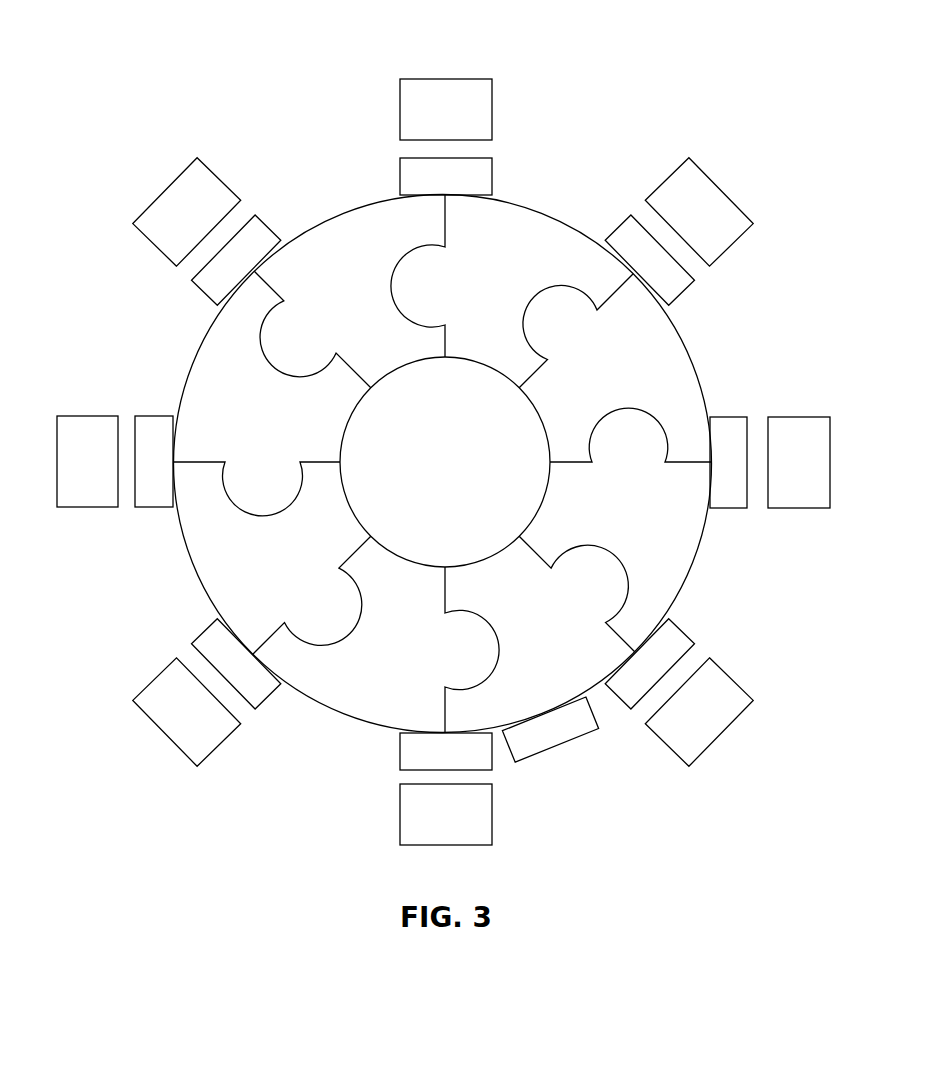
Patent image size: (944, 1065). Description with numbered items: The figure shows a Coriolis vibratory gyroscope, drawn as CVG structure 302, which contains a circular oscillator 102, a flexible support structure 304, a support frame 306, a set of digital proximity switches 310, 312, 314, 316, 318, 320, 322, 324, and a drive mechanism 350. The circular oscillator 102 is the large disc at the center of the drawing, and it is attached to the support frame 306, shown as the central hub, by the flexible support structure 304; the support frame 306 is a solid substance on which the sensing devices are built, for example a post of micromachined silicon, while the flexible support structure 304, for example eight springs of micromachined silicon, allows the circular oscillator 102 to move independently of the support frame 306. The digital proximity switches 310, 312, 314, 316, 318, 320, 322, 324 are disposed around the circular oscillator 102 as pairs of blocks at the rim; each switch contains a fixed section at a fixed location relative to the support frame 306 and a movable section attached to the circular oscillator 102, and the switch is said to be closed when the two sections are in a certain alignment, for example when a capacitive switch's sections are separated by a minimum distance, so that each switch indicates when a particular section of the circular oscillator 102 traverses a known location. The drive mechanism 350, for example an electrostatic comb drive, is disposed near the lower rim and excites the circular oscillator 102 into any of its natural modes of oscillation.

The CVG structure 302 is at (203, 59).
The circular oscillator 102 is at (196, 348).
The flexible support structure 304 is at (265, 635).
The support frame 306 is at (393, 555).
The digital proximity switch 310 is at (783, 408).
The digital proximity switch 312 is at (636, 204).
The digital proximity switch 314 is at (393, 161).
The digital proximity switch 316 is at (295, 204).
The digital proximity switch 318 is at (148, 408).
The digital proximity switch 320 is at (175, 652).
The digital proximity switch 322 is at (385, 789).
The digital proximity switch 324 is at (756, 647).
The drive mechanism 350 is at (560, 748).